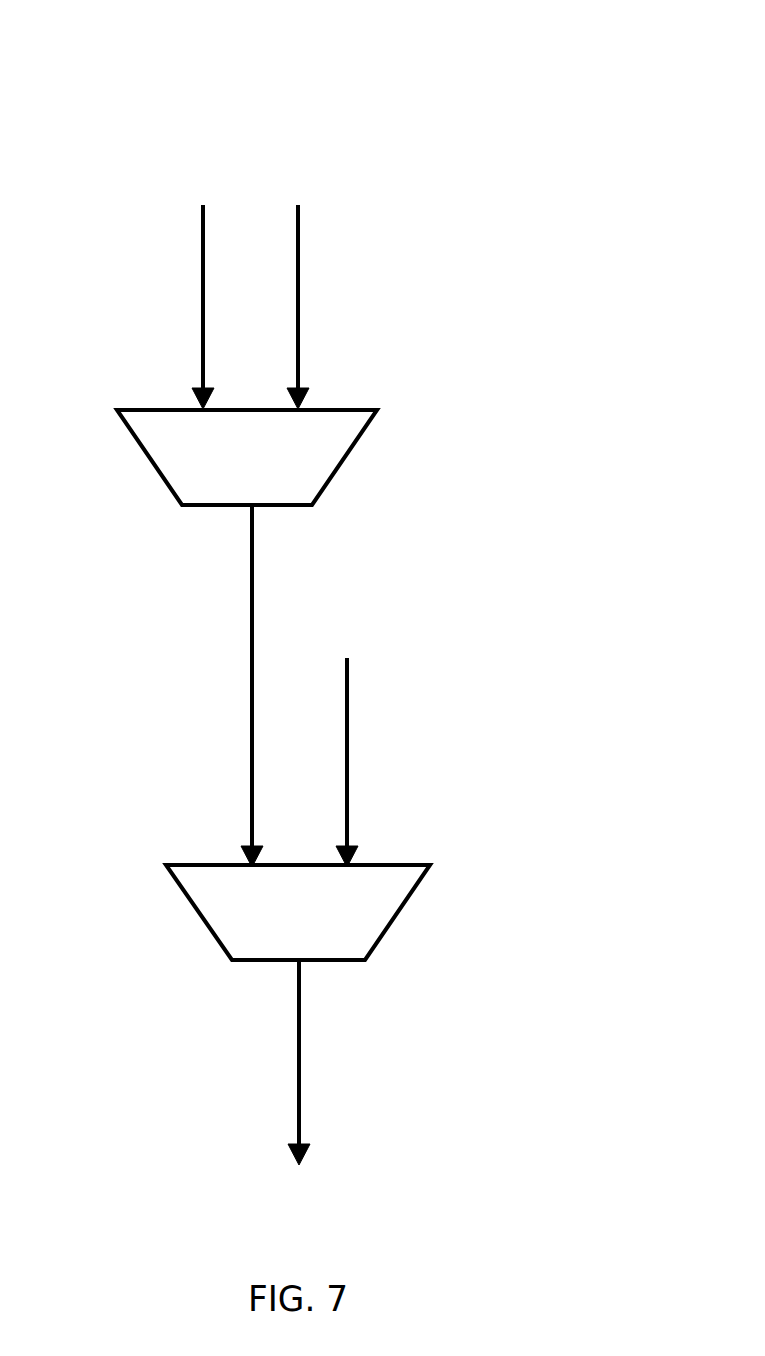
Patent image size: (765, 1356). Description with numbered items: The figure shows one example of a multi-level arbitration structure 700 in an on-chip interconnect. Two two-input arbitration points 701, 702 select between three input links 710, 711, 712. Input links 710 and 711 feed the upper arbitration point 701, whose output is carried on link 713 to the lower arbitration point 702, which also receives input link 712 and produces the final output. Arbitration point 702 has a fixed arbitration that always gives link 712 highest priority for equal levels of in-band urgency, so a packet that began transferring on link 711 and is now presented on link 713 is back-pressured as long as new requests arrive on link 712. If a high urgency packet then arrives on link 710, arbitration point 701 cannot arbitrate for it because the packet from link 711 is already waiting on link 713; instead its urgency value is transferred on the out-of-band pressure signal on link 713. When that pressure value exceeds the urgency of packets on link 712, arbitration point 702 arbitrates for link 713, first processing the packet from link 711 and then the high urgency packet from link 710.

The multi-level arbitration structure 700 is at (271, 37).
The arbitration point 701 is at (353, 450).
The arbitration point 702 is at (400, 907).
The input link 710 is at (203, 288).
The input link 711 is at (298, 278).
The input link 712 is at (347, 703).
The link 713 is at (252, 657).